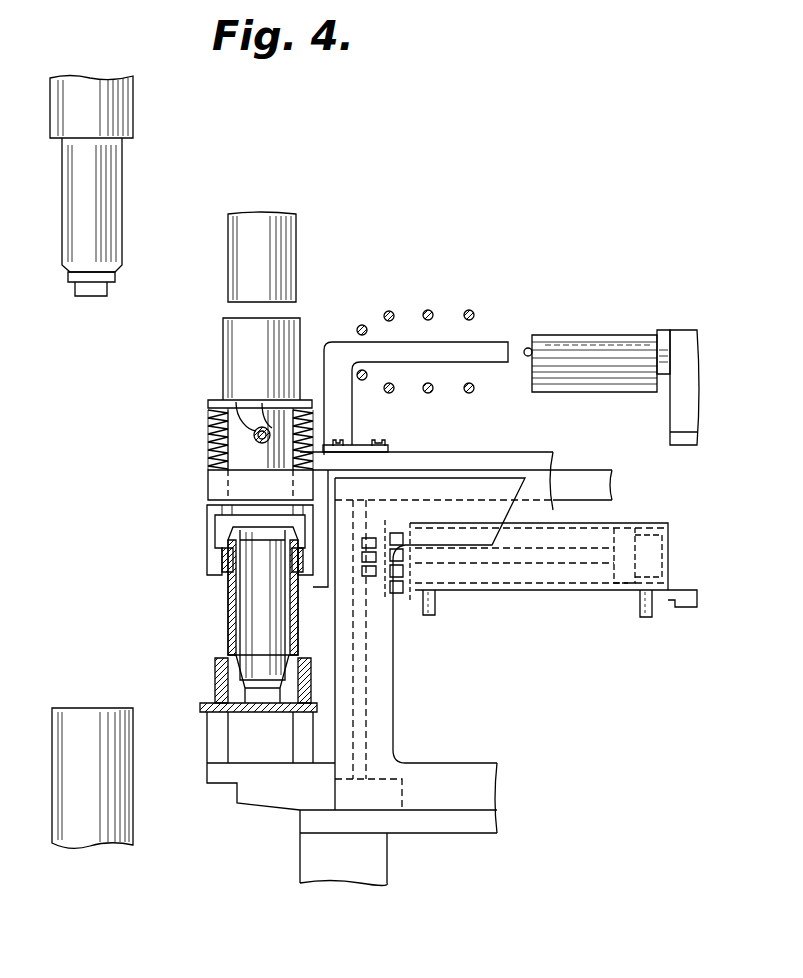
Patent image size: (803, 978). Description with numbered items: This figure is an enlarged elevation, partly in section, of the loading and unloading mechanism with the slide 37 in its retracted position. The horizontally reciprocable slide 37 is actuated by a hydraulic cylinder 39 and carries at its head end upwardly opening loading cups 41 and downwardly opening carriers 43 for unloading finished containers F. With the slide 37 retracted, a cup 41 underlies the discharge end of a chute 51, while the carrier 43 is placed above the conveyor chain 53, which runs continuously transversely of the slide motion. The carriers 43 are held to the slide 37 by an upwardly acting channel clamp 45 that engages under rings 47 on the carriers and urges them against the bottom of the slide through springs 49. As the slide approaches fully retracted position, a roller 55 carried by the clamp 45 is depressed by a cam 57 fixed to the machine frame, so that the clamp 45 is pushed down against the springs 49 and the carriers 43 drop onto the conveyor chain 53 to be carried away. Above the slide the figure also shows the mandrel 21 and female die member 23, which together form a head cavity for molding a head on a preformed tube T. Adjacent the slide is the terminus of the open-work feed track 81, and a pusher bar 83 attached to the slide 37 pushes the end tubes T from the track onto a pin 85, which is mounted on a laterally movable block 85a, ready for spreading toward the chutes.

The mandrel 21 is at (100, 190).
The female die member 23 is at (112, 792).
The chute 51 is at (280, 250).
The loading cup 41 is at (238, 352).
The cam 57 is at (262, 413).
The roller 55 is at (252, 418).
The spring 49 is at (210, 428).
The pusher bar 83 is at (478, 348).
The feed track 81 is at (392, 312).
The pin 85 is at (526, 356).
The block 85a is at (662, 335).
The tube T is at (602, 380).
The slide 37 is at (210, 488).
The hydraulic cylinder 39 is at (543, 570).
The channel clamp 45 is at (212, 527).
The ring 47 is at (222, 560).
The carrier 43 is at (228, 626).
The container F is at (250, 592).
The conveyor chain 53 is at (250, 714).